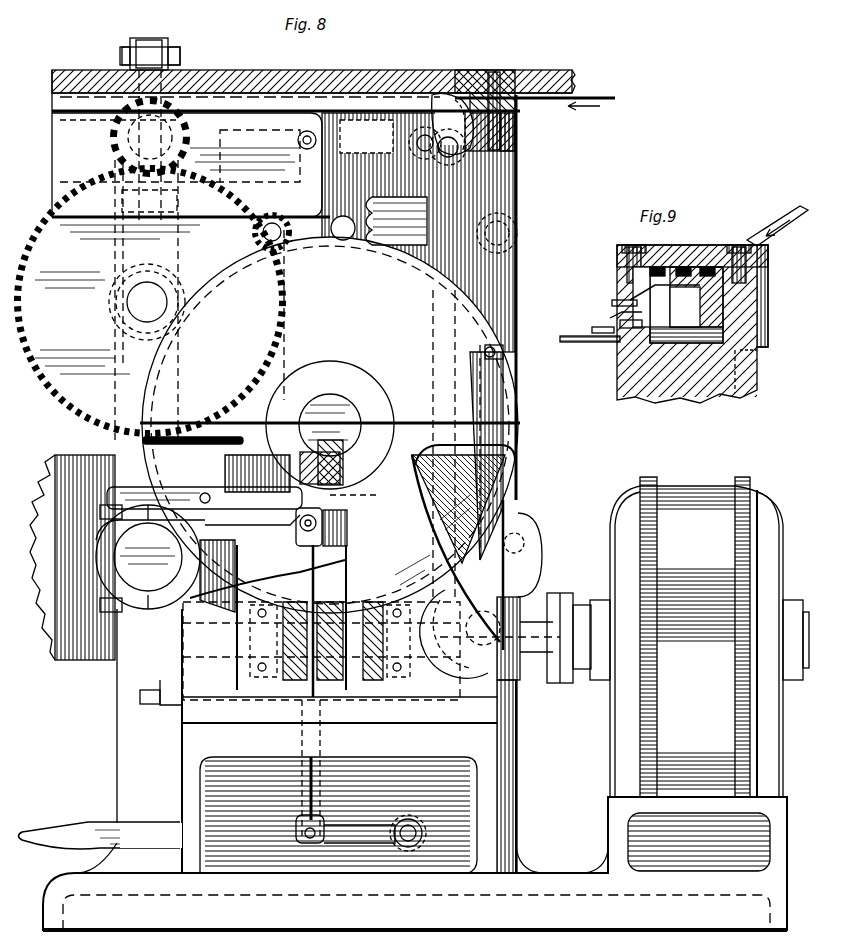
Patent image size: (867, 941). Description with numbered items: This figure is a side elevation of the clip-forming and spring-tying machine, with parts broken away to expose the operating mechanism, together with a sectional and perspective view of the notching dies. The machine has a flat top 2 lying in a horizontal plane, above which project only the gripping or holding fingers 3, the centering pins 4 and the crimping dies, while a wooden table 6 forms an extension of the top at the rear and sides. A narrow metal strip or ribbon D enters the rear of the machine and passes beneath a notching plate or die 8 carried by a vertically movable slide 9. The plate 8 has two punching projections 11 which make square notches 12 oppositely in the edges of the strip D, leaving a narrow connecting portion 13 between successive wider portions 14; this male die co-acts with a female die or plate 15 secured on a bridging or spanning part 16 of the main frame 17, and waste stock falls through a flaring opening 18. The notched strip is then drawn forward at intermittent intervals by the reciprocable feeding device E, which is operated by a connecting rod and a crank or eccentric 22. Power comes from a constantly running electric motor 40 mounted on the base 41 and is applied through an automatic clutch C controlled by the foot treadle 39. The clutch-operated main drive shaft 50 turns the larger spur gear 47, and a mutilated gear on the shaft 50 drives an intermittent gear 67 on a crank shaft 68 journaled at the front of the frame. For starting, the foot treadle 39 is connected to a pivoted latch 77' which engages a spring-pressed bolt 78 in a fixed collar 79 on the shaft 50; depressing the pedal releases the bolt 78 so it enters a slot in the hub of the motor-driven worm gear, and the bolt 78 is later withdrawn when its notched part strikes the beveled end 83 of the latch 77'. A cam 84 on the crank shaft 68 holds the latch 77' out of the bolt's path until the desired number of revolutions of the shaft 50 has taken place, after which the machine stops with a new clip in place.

In FIG. 8, the flat top 2 is at (445, 92).
In FIG. 8, the gripping or holding fingers 3 is at (148, 40).
In FIG. 8, the centering pins 4 is at (120, 55).
In FIG. 8, the wooden table 6 is at (574, 77).
In FIG. 8, the notching plate or die 8 is at (490, 90).
In FIG. 9, the notching plate or die 8 is at (617, 250).
In FIG. 9, the vertically movable slide 9 is at (617, 380).
In FIG. 8, the punching projections 11 is at (496, 95).
In FIG. 9, the punching projections 11 is at (672, 247).
In FIG. 9, the square notches 12 is at (614, 318).
In FIG. 9, the narrow connecting portion 13 is at (626, 296).
In FIG. 8, the wider portions 14 is at (503, 350).
In FIG. 9, the wider portions 14 is at (560, 338).
In FIG. 8, the female die or plate 15 is at (510, 100).
In FIG. 9, the female die or plate 15 is at (617, 268).
In FIG. 8, the bridging or spanning part 16 is at (516, 118).
In FIG. 9, the bridging or spanning part 16 is at (722, 305).
In FIG. 8, the main frame 17 is at (516, 192).
In FIG. 8, the flaring opening 18 is at (516, 146).
In FIG. 8, the crank or eccentric 22 is at (430, 92).
In FIG. 8, the foot treadle 39 is at (70, 822).
In FIG. 8, the electric motor 40 is at (709, 637).
In FIG. 8, the base 41 is at (563, 870).
In FIG. 8, the spur gear 47 is at (150, 300).
In FIG. 8, the main drive shaft 50 is at (338, 400).
In FIG. 8, the intermittent gear 67 is at (52, 628).
In FIG. 8, the crank shaft 68 is at (150, 558).
In FIG. 8, the pivoted latch 77' is at (364, 514).
In FIG. 8, the spring-pressed bolt 78 is at (345, 465).
In FIG. 8, the fixed collar 79 is at (290, 452).
In FIG. 8, the beveled end 83 is at (345, 492).
In FIG. 8, the cam 84 is at (160, 622).
In FIG. 8, the automatic clutch C is at (348, 525).
In FIG. 8, the metal strip or ribbon D is at (616, 98).
In FIG. 9, the metal strip or ribbon D is at (790, 205).
In FIG. 8, the reciprocable feeding device E is at (340, 92).